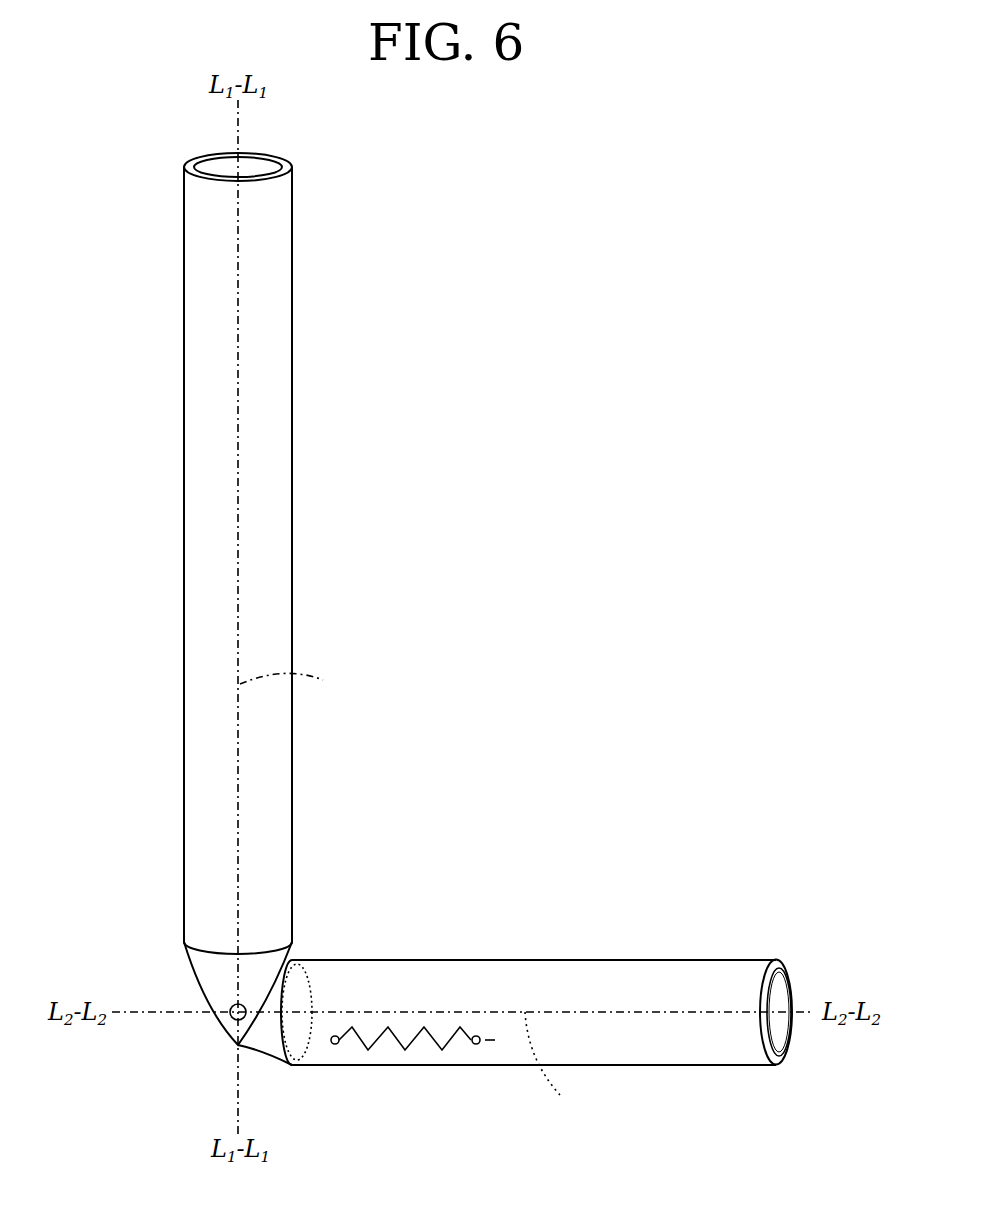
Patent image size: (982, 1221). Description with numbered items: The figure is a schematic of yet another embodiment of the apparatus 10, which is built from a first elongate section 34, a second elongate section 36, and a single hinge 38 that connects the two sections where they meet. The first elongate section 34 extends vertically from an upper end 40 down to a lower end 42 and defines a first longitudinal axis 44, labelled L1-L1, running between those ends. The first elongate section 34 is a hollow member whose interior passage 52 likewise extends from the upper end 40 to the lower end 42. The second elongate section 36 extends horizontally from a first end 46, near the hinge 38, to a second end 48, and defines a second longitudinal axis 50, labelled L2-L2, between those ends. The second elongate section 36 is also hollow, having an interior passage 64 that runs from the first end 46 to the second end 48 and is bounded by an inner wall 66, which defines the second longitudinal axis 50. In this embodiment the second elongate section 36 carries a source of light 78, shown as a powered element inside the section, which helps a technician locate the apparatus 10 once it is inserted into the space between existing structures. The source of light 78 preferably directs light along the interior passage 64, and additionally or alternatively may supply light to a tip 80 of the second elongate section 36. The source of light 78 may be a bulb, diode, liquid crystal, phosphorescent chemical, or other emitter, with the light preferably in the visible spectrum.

The apparatus 10 is at (562, 238).
The first elongate section 34 is at (292, 580).
The second elongate section 36 is at (498, 960).
The single hinge 38 is at (231, 1018).
The upper end 40 is at (183, 255).
The lower end 42 is at (184, 890).
The first longitudinal axis 44 is at (299, 681).
The first end 46 is at (320, 1065).
The second end 48 is at (708, 1067).
The second longitudinal axis 50 is at (563, 1065).
The interior passage 52 is at (256, 160).
The interior passage 64 is at (778, 990).
The inner wall 66 is at (790, 1042).
The source of light 78 is at (408, 1048).
The tip 80 is at (792, 1005).